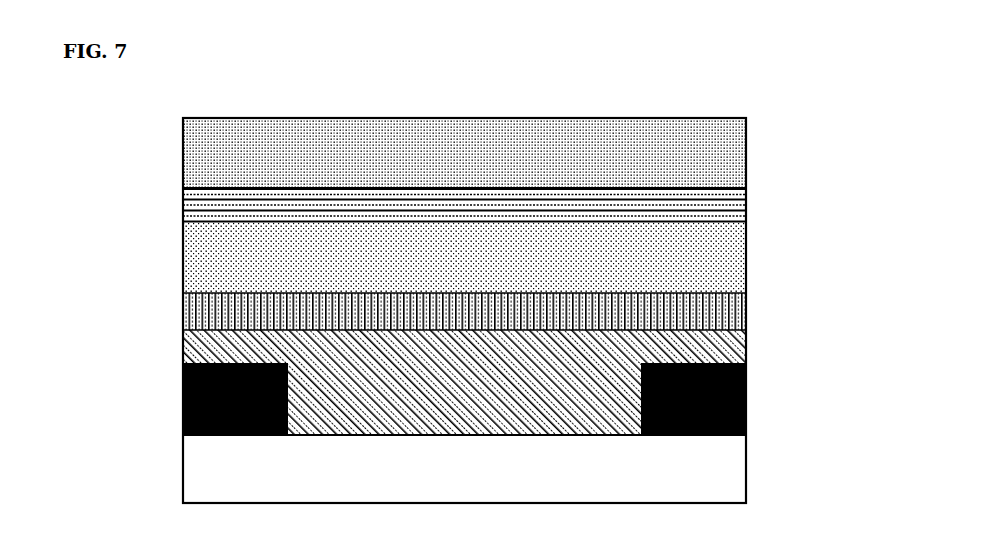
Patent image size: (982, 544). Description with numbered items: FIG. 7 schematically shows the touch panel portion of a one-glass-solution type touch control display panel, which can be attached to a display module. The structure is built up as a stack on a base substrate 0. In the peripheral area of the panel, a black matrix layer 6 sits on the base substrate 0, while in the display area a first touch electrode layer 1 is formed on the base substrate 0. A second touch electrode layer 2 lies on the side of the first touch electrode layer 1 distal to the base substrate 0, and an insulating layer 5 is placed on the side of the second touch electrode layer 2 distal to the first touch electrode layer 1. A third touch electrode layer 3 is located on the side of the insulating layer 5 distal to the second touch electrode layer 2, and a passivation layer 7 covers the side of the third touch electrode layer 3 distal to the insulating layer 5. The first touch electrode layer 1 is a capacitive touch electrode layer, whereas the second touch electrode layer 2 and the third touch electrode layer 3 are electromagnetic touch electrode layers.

The base substrate 0 is at (746, 470).
The first touch electrode layer 1 is at (746, 347).
The second touch electrode layer 2 is at (746, 312).
The third touch electrode layer 3 is at (746, 207).
The insulating layer 5 is at (746, 258).
The black matrix layer 6 is at (746, 399).
The passivation layer 7 is at (746, 154).